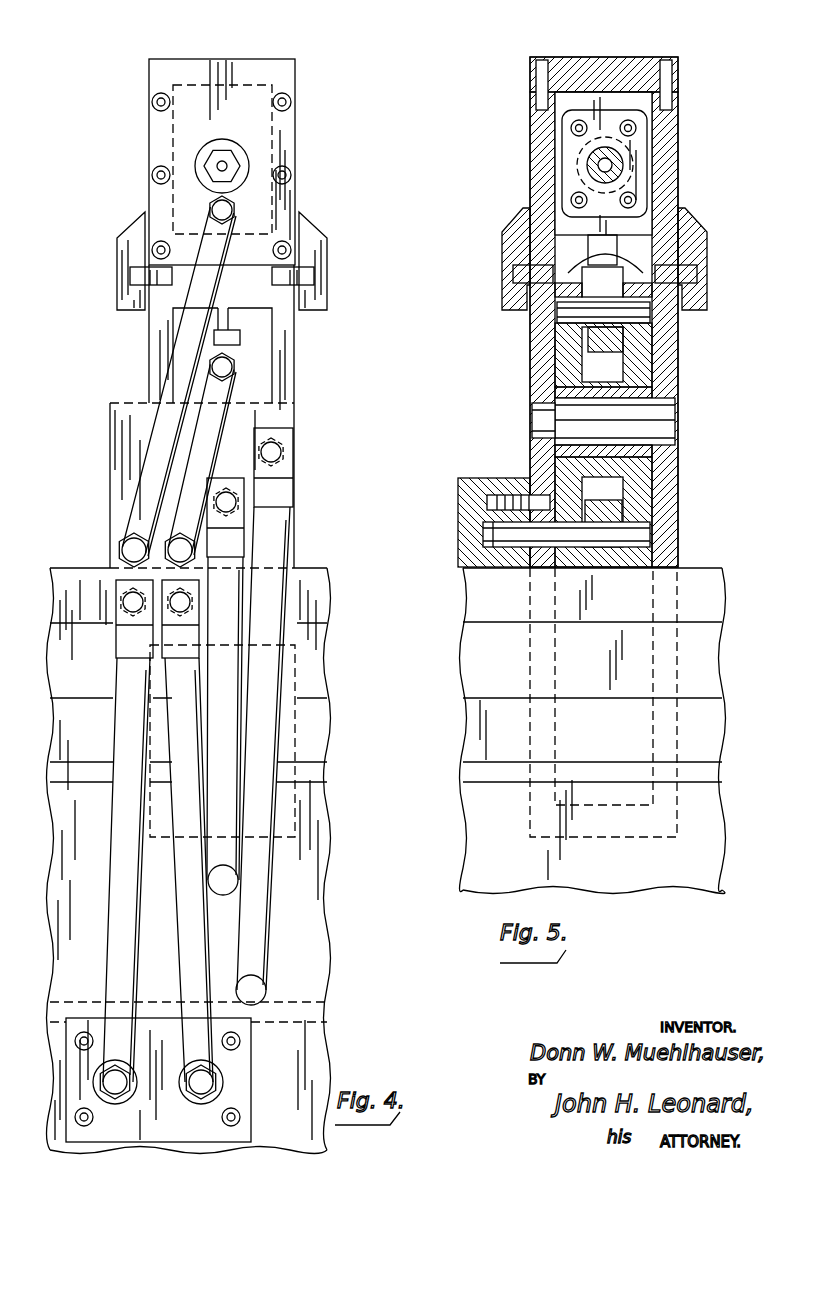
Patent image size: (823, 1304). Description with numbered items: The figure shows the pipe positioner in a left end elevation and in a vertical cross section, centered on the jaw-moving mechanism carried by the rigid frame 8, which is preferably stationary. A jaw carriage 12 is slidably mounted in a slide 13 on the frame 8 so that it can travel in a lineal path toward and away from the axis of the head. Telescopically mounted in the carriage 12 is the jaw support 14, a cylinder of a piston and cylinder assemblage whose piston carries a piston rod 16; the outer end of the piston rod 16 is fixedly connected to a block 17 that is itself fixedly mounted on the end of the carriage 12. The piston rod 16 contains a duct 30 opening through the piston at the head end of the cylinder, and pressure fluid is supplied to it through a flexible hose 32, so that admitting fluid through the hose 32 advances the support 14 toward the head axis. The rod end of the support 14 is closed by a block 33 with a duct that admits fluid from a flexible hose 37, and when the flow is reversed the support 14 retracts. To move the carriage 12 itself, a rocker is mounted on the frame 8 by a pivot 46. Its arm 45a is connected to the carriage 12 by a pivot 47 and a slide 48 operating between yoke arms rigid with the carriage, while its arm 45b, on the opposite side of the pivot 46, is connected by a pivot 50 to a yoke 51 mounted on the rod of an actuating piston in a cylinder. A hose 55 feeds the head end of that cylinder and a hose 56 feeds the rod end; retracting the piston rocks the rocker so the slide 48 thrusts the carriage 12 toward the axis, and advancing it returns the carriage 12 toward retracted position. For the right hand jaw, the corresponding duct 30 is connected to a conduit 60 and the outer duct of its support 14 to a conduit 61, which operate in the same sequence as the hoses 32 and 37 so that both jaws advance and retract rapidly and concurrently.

In FIG. 4, the frame 8 is at (297, 358).
In FIG. 5, the jaw carriage 12 is at (668, 140).
In FIG. 4, the slide 13 is at (140, 277).
In FIG. 5, the slide 13 is at (520, 275).
In FIG. 4, the jaw support 14 is at (243, 82).
In FIG. 5, the jaw support 14 is at (572, 105).
In FIG. 5, the piston rod 16 is at (593, 176).
In FIG. 4, the block 17 is at (283, 138).
In FIG. 5, the duct 30 is at (600, 160).
In FIG. 4, the flexible hose 32 is at (152, 492).
In FIG. 5, the block 33 is at (637, 184).
In FIG. 4, the flexible hose 37 is at (188, 525).
In FIG. 5, the rocker arm 45a is at (648, 362).
In FIG. 5, the rocker arm 45b is at (565, 487).
In FIG. 5, the pivot 46 is at (660, 418).
In FIG. 5, the pivot 47 is at (565, 305).
In FIG. 5, the slide 48 is at (590, 338).
In FIG. 5, the pivot 50 is at (648, 530).
In FIG. 5, the yoke 51 is at (612, 492).
In FIG. 4, the hose 55 is at (222, 735).
In FIG. 4, the hose 56 is at (270, 678).
In FIG. 4, the conduit 60 is at (118, 976).
In FIG. 4, the conduit 61 is at (192, 976).